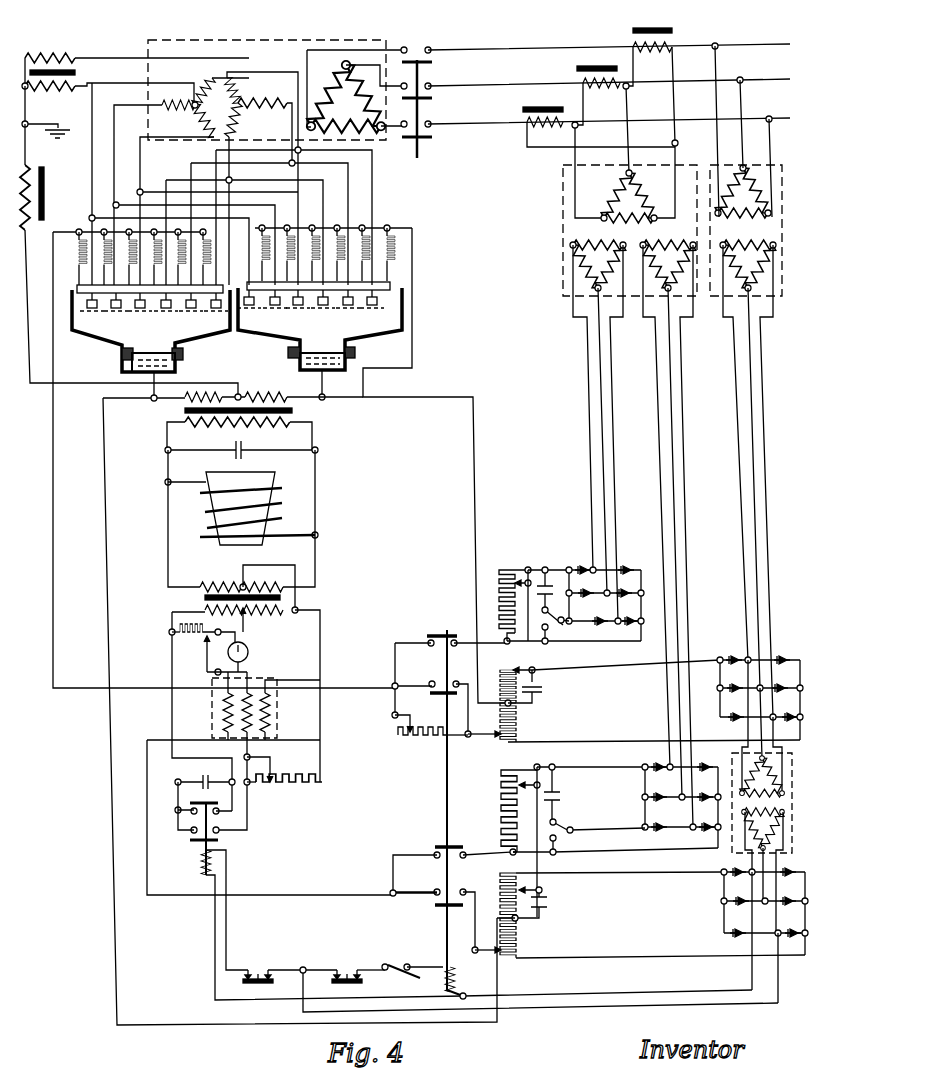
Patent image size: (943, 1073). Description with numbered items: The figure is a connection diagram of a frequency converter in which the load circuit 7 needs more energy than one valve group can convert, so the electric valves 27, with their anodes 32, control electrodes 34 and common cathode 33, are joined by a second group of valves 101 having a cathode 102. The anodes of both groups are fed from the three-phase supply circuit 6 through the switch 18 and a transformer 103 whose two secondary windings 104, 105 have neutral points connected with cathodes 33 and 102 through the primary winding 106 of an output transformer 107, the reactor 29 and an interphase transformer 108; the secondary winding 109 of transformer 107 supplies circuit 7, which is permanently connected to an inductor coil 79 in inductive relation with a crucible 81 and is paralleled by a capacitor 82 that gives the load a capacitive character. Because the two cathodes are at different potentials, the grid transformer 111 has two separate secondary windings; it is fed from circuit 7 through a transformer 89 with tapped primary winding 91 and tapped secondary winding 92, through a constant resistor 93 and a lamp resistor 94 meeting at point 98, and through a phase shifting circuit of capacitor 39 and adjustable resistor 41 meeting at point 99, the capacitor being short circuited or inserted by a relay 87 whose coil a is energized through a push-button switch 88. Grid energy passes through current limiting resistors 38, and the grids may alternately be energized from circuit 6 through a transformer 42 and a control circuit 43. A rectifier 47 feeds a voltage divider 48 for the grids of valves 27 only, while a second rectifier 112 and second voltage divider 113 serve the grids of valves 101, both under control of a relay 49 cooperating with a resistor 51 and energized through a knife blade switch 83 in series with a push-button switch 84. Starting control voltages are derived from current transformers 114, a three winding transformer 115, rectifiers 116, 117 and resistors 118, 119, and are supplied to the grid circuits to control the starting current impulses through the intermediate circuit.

The interphase transformer 108 is at (55, 90).
The reactor 29 is at (45, 190).
The secondary winding 105 is at (193, 110).
The secondary winding 104 is at (243, 108).
The transformer 103 is at (382, 138).
The switch 18 is at (421, 148).
The three-phase supply circuit 6 is at (483, 48).
The current transformers 114 is at (632, 30).
The three winding transformer 115 is at (563, 232).
The transformer 42 is at (771, 298).
The control circuit 43 is at (752, 440).
The current limiting resistors 38 is at (385, 228).
The second group of valves 101 is at (108, 340).
The cathode 102 is at (176, 362).
The anodes 32 is at (298, 308).
The control electrodes 34 is at (306, 308).
The electric valves 27 is at (379, 336).
The common cathode 33 is at (328, 371).
The primary winding 106 is at (270, 392).
The output transformer 107 is at (293, 410).
The secondary winding 109 is at (257, 427).
The capacitor 82 is at (235, 451).
The single-phase load circuit 7 is at (166, 455).
The crucible 81 is at (278, 476).
The inductor coil 79 is at (284, 506).
The tapped primary winding 91 is at (238, 582).
The transformer 89 is at (204, 597).
The tapped secondary winding 92 is at (280, 615).
The resistor 93 is at (193, 636).
The resistor 94 is at (249, 652).
The point 98 is at (215, 674).
The transformer 111 is at (272, 700).
The capacitor 39 is at (201, 778).
The point 99 is at (252, 786).
The adjustable resistor 41 is at (296, 788).
The relay 87 is at (190, 853).
The relay coil a is at (200, 868).
The push-button switch 88 is at (257, 968).
The push-button switch 84 is at (346, 968).
The knife blade switch 83 is at (406, 973).
The resistor 51 is at (416, 740).
The relay 49 is at (444, 795).
The voltage divider 48 is at (518, 728).
The resistor 118 is at (510, 568).
The rectifier 116 is at (608, 614).
The rectifier 47 is at (742, 708).
The resistor 119 is at (507, 788).
The rectifier 117 is at (682, 819).
The second voltage divider 113 is at (520, 940).
The second rectifier 112 is at (750, 924).